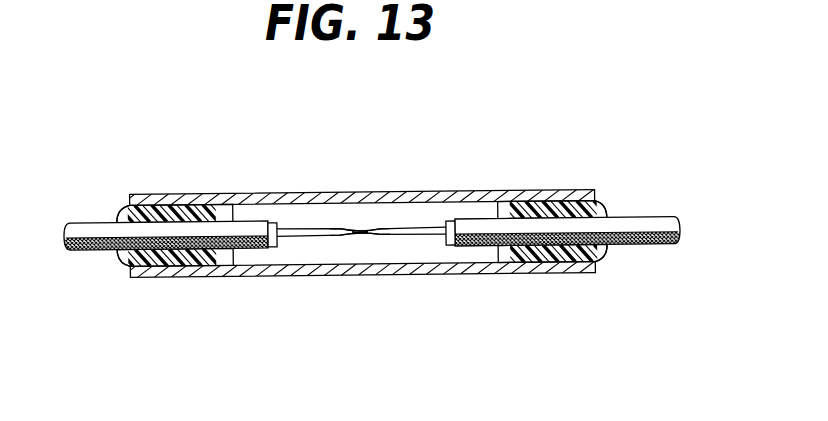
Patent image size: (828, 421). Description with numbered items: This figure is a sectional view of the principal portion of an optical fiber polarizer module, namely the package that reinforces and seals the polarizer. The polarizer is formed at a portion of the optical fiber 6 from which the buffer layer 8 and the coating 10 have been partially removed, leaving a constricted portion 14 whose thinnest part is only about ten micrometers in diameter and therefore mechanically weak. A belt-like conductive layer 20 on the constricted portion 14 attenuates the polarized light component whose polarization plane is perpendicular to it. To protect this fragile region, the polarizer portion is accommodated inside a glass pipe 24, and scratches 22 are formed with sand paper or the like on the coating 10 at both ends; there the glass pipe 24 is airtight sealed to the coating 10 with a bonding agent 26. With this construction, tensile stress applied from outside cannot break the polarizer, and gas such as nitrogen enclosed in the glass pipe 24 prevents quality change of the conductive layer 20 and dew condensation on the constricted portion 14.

The optical fiber 6 is at (417, 228).
The buffer layer 8 is at (273, 246).
The coating 10 is at (233, 220).
The constricted portion 14 is at (363, 228).
The conductive layer 20 is at (360, 233).
The scratches 22 is at (233, 243).
The glass pipe 24 is at (553, 192).
The bonding agent 26 is at (120, 267).